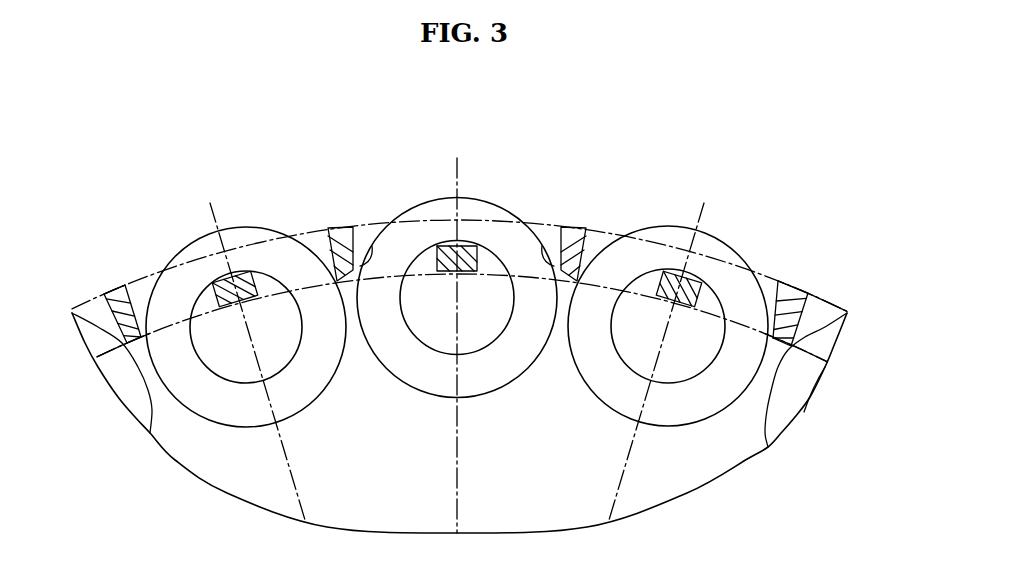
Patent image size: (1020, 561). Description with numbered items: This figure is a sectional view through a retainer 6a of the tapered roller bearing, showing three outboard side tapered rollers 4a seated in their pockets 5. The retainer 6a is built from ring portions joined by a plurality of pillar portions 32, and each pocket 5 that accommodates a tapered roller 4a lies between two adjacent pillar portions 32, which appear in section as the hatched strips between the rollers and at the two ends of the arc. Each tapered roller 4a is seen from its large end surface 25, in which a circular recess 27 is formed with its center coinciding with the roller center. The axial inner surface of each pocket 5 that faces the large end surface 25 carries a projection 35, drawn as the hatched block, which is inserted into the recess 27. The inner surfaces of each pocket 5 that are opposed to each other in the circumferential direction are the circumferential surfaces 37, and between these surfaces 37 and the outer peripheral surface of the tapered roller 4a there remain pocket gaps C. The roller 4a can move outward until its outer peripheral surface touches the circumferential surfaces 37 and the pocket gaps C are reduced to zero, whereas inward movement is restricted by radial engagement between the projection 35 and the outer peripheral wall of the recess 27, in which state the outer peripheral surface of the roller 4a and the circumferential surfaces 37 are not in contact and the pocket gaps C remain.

The outboard side tapered roller 4a is at (160, 270).
The pocket 5 is at (313, 243).
The retainer 6a is at (822, 284).
The large end surface 25 is at (296, 393).
The recess 27 is at (222, 375).
The pillar portion 32 is at (343, 236).
The projection 35 is at (228, 290).
The circumferential surface 37 is at (368, 255).
The pocket gap C is at (361, 269).